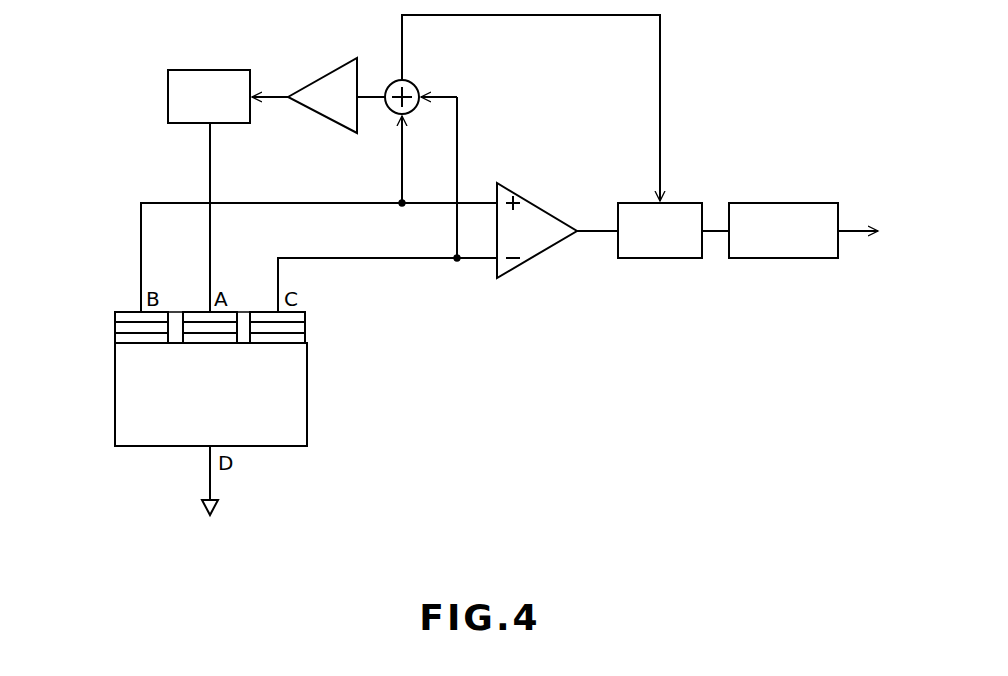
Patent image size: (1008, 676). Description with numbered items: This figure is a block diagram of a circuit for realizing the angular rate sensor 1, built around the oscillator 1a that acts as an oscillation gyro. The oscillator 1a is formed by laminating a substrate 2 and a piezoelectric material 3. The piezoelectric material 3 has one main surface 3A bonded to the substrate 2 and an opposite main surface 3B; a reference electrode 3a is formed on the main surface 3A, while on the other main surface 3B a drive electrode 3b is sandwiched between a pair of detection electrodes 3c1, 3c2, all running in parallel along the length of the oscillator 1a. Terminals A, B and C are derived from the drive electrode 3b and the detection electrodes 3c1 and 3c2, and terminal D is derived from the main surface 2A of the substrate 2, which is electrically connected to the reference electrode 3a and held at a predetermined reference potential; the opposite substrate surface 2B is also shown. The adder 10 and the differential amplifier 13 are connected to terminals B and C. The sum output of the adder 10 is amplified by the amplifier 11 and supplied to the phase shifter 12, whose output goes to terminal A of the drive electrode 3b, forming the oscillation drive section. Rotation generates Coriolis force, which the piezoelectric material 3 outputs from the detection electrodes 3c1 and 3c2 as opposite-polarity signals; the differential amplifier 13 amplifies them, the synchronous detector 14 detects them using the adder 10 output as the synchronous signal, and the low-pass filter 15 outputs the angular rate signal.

The angular rate sensor 1 is at (279, 483).
The oscillator 1a is at (309, 408).
The substrate 2 is at (136, 407).
The main surface of substrate 2A is at (138, 448).
The upper surface of substrate 2B is at (290, 345).
The piezoelectric material 3 is at (126, 327).
The one main surface of piezoelectric material 3A is at (126, 347).
The other main surface of piezoelectric material 3B is at (287, 317).
The reference electrode 3a is at (150, 343).
The drive electrode 3b is at (196, 312).
The detection electrode 3c1 is at (126, 311).
The detection electrode 3c2 is at (269, 309).
The adder 10 is at (414, 85).
The amplifier 11 is at (315, 77).
The phase shifter 12 is at (208, 70).
The differential amplifier 13 is at (533, 253).
The synchronous detector 14 is at (657, 258).
The low-pass filter 15 is at (778, 258).